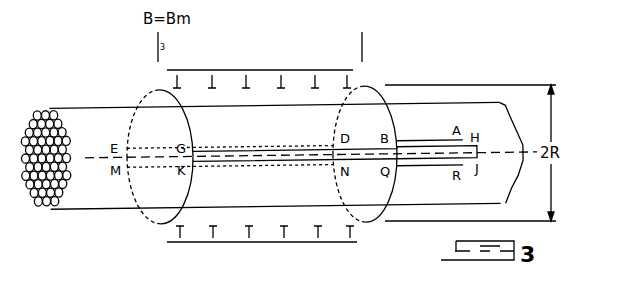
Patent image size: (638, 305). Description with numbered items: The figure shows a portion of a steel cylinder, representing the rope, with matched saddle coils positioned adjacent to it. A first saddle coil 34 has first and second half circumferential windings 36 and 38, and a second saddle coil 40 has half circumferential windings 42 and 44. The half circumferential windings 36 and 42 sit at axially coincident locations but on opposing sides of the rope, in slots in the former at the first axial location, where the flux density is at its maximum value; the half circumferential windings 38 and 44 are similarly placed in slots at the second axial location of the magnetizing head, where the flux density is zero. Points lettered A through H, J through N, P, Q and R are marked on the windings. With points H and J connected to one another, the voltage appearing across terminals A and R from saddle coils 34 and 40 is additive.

The saddle coil 34 is at (400, 47).
The first half circumferential winding 36 is at (147, 94).
The second half circumferential winding 38 is at (374, 89).
The saddle coil 40 is at (142, 242).
The half circumferential winding 42 is at (147, 218).
The half circumferential winding 44 is at (372, 222).